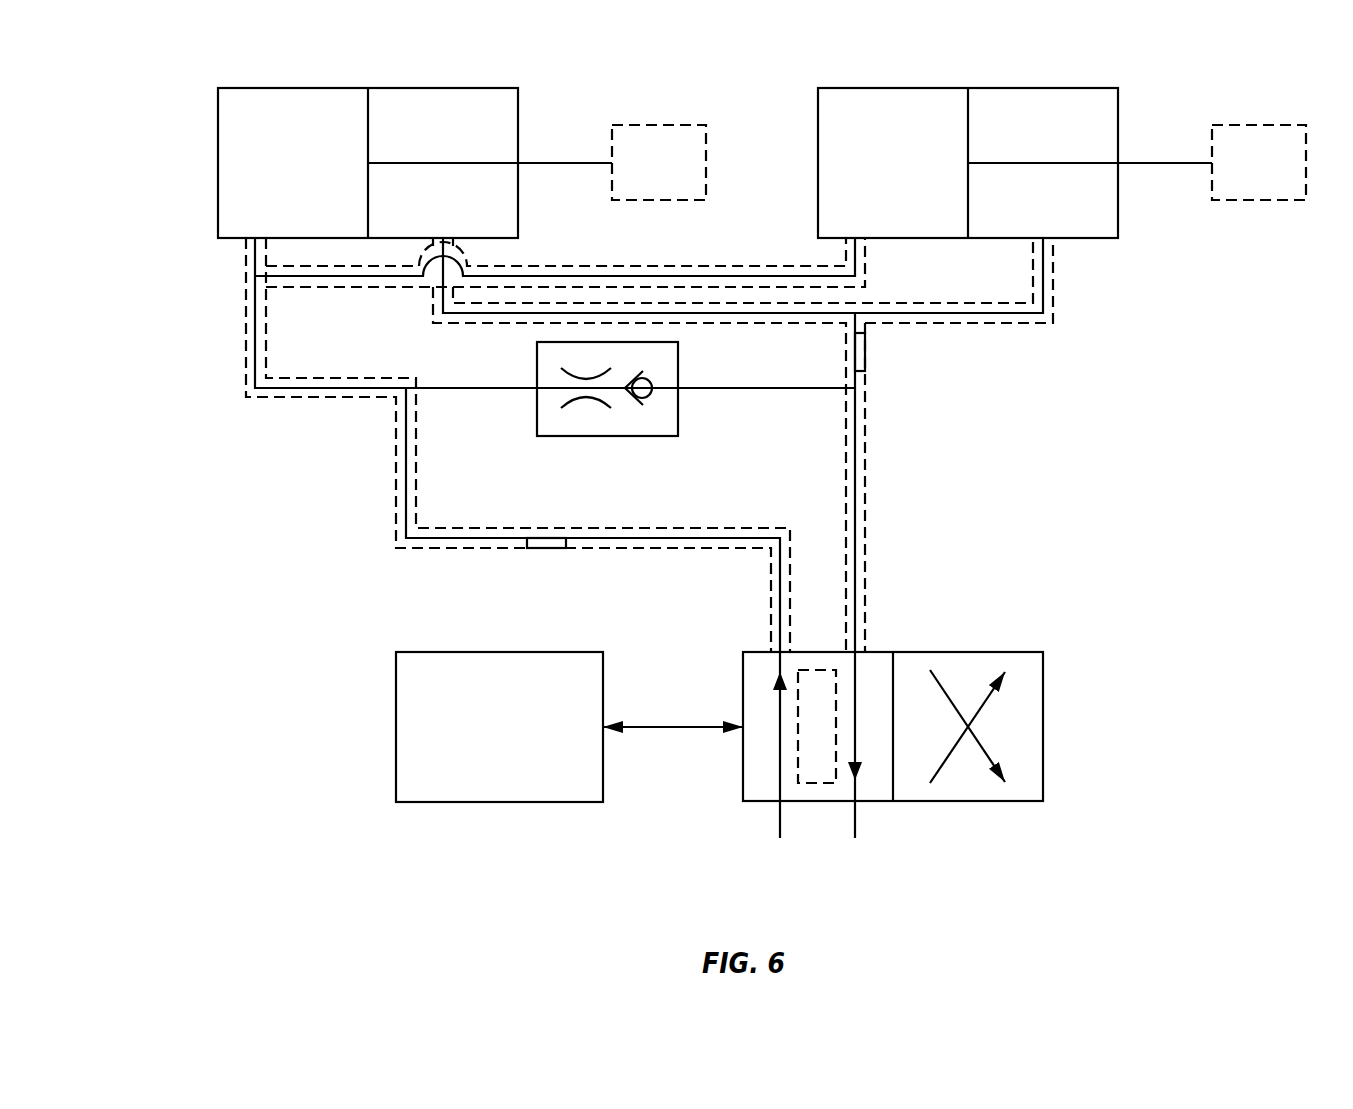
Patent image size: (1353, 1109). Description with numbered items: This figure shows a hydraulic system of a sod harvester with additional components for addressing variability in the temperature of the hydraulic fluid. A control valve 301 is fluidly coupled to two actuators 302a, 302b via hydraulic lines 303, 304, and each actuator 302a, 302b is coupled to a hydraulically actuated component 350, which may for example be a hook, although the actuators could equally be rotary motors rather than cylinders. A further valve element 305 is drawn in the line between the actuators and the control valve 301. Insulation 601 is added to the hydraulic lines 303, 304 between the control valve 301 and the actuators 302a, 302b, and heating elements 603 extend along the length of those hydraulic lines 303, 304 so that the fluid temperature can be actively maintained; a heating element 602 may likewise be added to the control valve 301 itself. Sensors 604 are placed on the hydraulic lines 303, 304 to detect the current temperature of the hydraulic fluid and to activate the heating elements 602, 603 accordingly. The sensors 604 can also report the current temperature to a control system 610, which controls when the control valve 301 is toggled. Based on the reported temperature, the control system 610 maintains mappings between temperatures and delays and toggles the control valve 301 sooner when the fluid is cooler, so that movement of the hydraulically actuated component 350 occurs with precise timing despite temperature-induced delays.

The control valve 301 is at (1008, 649).
The actuator 302a is at (217, 141).
The actuator 302b is at (817, 141).
The hydraulic line 303 is at (405, 512).
The hydraulic line 304 is at (867, 497).
The flow control valve 305 is at (653, 439).
The hydraulically actuated component 350 is at (677, 176).
The insulation 601 is at (245, 371).
The heating element 603 is at (1056, 317).
The heating element 602 is at (816, 729).
The sensor 604 is at (867, 355).
The control system 610 is at (517, 741).